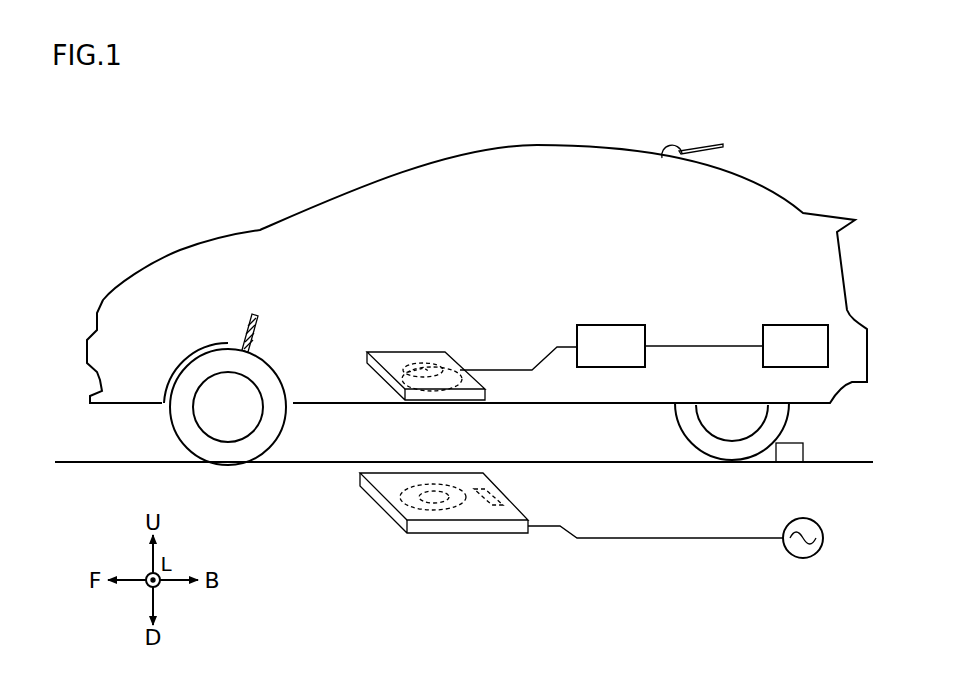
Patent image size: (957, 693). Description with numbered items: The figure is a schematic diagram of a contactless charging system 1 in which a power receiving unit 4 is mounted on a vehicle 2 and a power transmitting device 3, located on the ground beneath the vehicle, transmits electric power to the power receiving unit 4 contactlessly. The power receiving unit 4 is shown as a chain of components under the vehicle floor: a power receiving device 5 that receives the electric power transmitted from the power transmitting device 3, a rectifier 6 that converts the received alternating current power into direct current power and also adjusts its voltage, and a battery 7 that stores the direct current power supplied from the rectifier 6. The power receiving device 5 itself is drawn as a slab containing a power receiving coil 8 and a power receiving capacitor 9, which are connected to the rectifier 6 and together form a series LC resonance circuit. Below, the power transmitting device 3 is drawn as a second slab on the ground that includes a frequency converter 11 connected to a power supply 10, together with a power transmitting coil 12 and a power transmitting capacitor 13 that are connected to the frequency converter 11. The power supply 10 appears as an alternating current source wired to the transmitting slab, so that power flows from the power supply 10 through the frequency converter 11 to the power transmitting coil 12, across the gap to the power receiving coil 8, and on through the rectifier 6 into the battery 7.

The contactless charging system 1 is at (287, 167).
The vehicle 2 is at (519, 145).
The power transmitting device 3 is at (378, 575).
The power receiving unit 4 is at (427, 275).
The power receiving device 5 is at (404, 308).
The rectifier 6 is at (614, 325).
The battery 7 is at (799, 325).
The power receiving coil 8 is at (452, 393).
The power receiving capacitor 9 is at (420, 366).
The power supply 10 is at (803, 558).
The frequency converter 11 is at (500, 507).
The power transmitting coil 12 is at (440, 512).
The power transmitting capacitor 13 is at (402, 528).